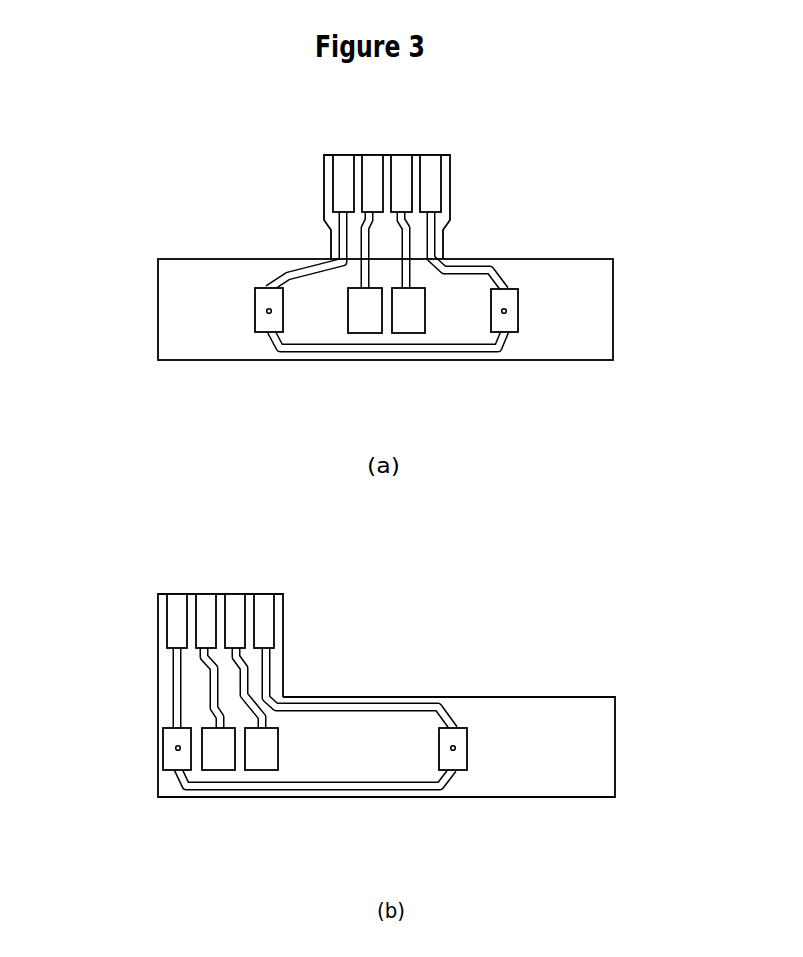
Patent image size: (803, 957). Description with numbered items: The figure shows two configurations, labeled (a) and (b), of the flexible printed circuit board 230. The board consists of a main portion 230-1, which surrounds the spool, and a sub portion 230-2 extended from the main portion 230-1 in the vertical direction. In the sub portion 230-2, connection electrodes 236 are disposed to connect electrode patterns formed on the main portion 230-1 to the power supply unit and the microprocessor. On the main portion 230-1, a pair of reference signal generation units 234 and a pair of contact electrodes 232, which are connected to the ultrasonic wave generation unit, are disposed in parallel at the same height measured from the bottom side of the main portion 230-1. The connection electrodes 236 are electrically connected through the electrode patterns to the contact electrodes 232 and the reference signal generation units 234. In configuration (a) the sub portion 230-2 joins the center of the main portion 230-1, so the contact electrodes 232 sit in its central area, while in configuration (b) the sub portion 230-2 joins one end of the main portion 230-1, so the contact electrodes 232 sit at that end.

The flexible printed circuit board 230 is at (369, 476).
The main portion 230-1 is at (148, 260).
The sub portion 230-2 is at (325, 155).
The contact electrodes 232 is at (410, 317).
The reference signal generation units 234 is at (260, 318).
The connection electrodes 236 is at (400, 165).